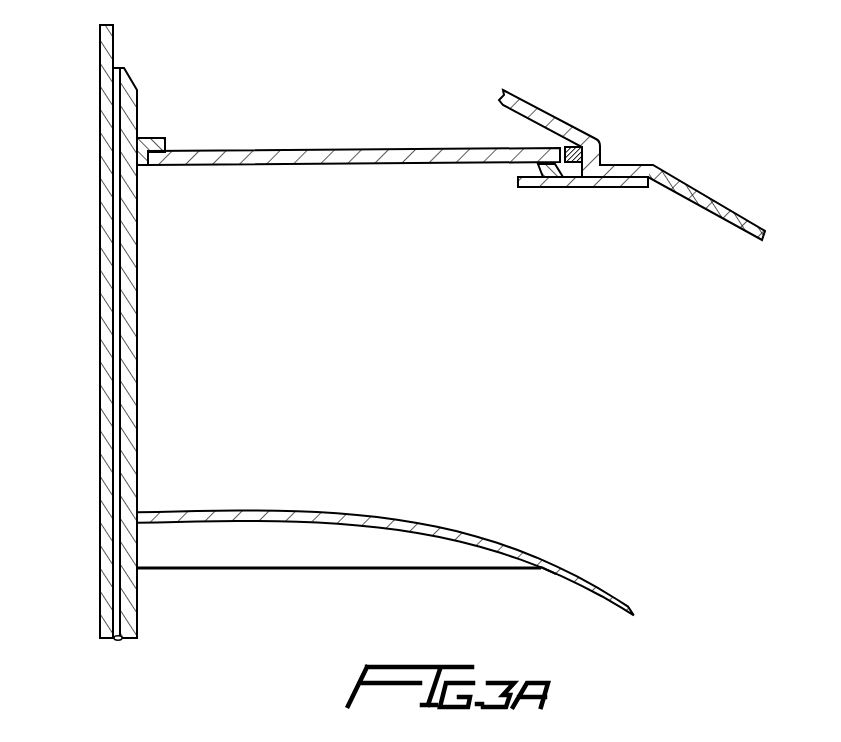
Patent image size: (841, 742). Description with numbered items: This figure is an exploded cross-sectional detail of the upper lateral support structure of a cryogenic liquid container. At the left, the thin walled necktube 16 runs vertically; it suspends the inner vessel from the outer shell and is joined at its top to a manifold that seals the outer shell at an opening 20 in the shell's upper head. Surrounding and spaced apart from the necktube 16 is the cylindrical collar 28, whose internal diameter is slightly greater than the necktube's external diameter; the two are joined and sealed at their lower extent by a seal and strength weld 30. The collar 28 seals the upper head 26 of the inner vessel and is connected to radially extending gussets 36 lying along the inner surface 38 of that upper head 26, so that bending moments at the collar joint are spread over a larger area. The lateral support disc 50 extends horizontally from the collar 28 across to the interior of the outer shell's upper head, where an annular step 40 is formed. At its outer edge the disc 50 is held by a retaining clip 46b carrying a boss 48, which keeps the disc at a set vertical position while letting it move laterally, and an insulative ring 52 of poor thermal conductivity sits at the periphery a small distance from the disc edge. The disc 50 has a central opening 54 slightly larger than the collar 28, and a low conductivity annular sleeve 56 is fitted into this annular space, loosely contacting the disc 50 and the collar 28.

The necktube 16 is at (100, 360).
The opening 20 is at (152, 501).
The upper head 26 is at (372, 512).
The cylindrical collar 28 is at (138, 308).
The seal and strength weld 30 is at (120, 645).
The gussets 36 is at (253, 570).
The inner surface 38 is at (553, 575).
The annular step 40 is at (601, 164).
The retaining clip 46b is at (557, 189).
The bosses 48 is at (538, 166).
The lateral support disc 50 is at (290, 164).
The insulative ring 52 is at (573, 146).
The central opening 54 is at (151, 173).
The annular sleeve 56 is at (150, 138).